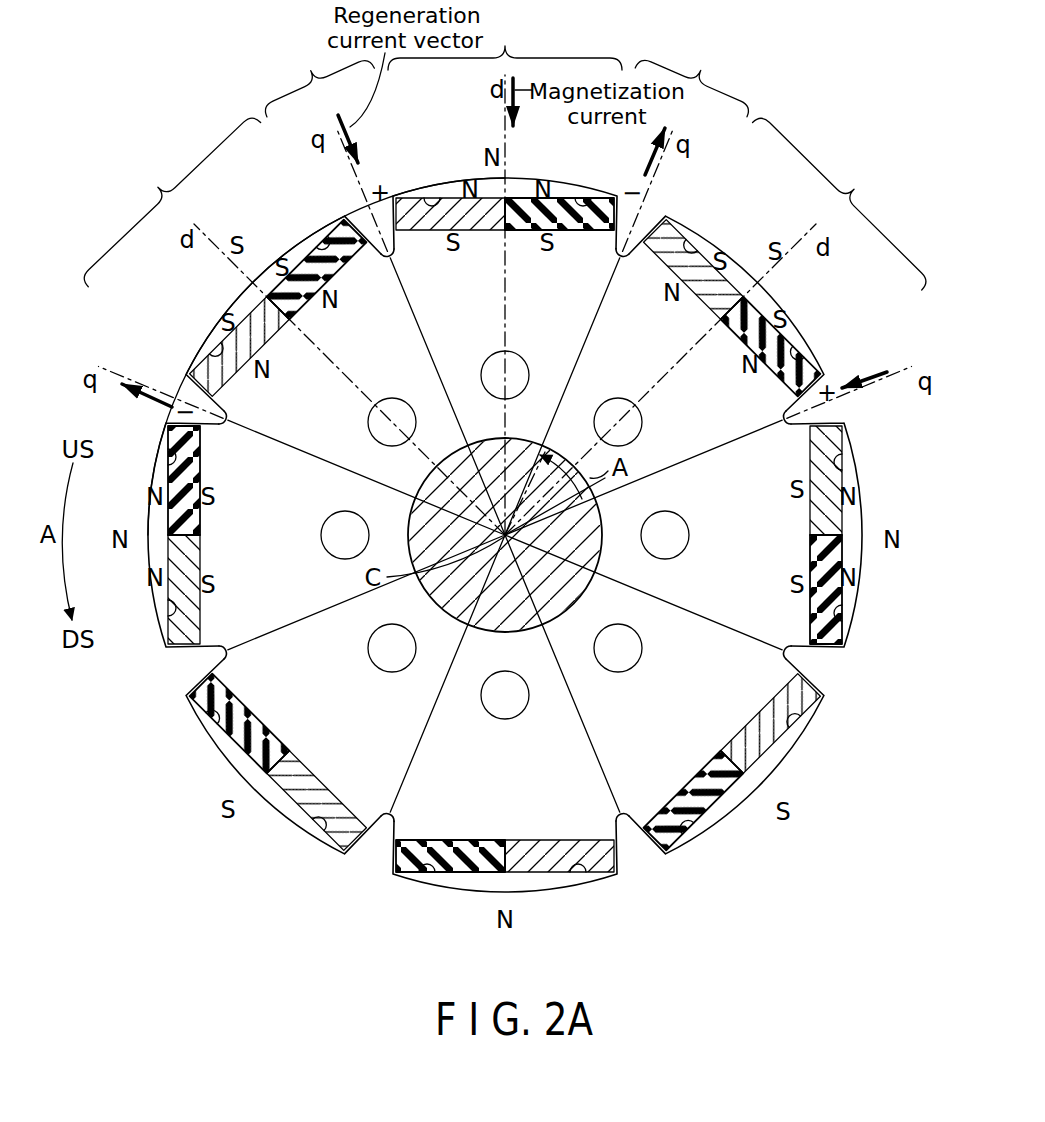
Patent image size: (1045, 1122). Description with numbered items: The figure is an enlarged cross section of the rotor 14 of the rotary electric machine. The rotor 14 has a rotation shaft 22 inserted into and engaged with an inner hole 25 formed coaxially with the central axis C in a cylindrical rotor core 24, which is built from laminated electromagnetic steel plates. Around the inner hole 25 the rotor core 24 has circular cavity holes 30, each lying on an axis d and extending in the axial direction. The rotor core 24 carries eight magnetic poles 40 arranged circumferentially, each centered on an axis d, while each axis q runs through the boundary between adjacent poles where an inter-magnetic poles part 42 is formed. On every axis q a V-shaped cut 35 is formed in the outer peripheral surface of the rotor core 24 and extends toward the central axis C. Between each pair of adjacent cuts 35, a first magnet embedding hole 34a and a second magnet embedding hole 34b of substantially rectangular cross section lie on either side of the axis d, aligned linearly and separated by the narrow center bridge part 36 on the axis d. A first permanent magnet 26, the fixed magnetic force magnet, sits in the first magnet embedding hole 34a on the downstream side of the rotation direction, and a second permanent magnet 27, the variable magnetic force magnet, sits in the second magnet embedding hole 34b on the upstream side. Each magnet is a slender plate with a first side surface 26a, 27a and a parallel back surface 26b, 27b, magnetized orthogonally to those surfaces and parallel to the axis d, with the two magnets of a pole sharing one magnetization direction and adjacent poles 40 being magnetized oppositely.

The rotor 14 is at (210, 749).
The rotation shaft 22 is at (505, 556).
The rotor core 24 is at (355, 742).
The inner hole 25 is at (532, 535).
The first permanent magnet 26 is at (505, 535).
The first side surface of first permanent magnet 26a is at (593, 190).
The second side surface of first permanent magnet 26b is at (543, 294).
The second permanent magnet 27 is at (505, 535).
The first side surface of second permanent magnet 27a is at (682, 220).
The second side surface of second permanent magnet 27b is at (647, 328).
The cavity hole 30 is at (528, 524).
The first magnet embedding hole 34a is at (493, 505).
The second magnet embedding hole 34b is at (519, 505).
The cut 35 is at (518, 536).
The center bridge part 36 is at (505, 563).
The magnetic pole 40 is at (510, 102).
The inter-magnetic poles part 42 is at (506, 62).